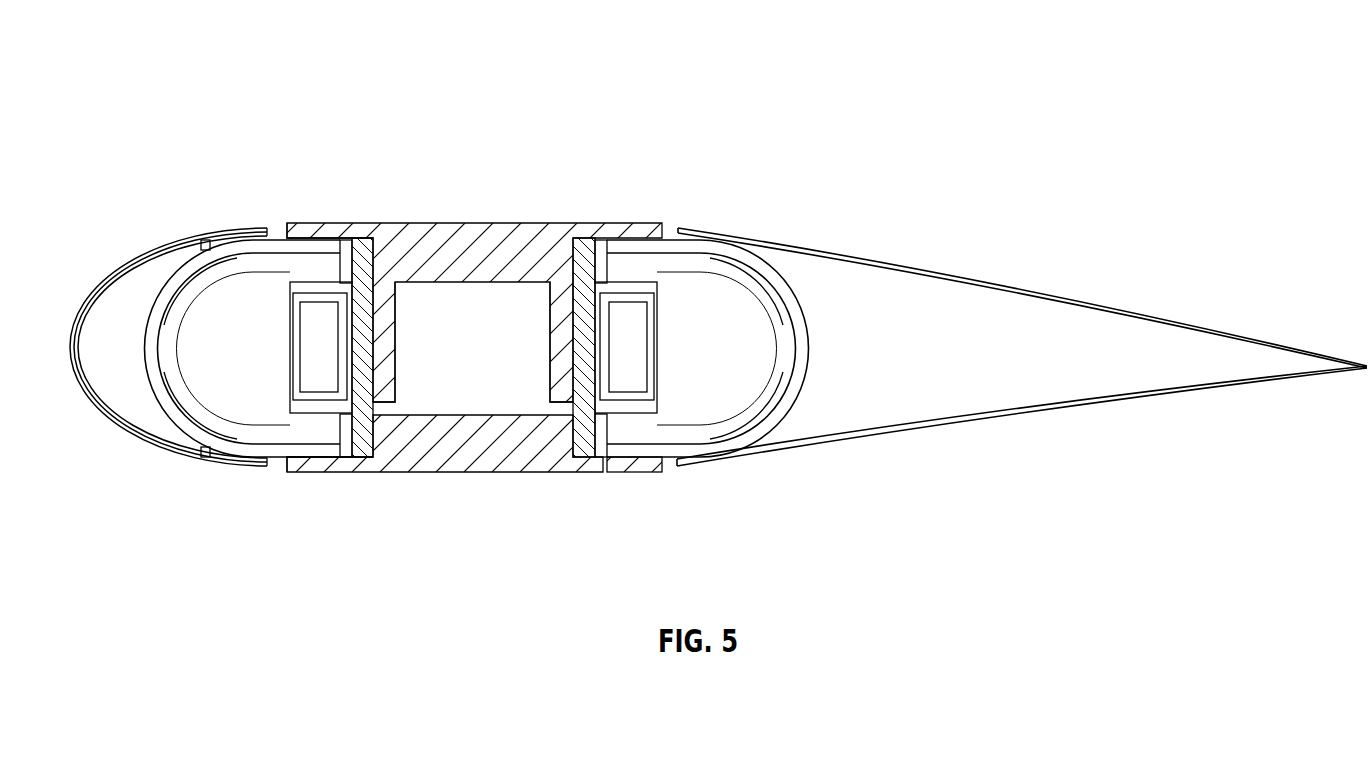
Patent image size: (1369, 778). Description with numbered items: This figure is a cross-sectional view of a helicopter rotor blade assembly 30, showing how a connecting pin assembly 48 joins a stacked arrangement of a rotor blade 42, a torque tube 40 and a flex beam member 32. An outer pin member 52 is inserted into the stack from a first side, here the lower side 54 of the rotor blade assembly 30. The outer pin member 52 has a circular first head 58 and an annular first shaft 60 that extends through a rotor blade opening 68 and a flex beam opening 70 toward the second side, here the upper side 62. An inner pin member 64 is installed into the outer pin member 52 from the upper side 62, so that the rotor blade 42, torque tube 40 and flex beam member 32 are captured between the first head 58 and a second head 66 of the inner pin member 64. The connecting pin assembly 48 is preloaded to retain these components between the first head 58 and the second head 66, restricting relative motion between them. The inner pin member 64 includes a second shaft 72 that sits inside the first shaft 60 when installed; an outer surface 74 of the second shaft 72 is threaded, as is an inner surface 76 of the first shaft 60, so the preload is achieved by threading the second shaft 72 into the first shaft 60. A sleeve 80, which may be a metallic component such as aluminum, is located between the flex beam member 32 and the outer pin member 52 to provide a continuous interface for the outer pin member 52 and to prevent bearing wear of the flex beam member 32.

The rotor blade assembly 30 is at (137, 120).
The flex beam member 32 is at (650, 378).
The torque tube 40 is at (670, 240).
The rotor blade 42 is at (223, 231).
The connecting pin assembly 48 is at (512, 234).
The outer pin member 52 is at (580, 472).
The lower side 54 is at (747, 457).
The first head 58 is at (305, 472).
The first shaft 60 is at (360, 387).
The upper side 62 is at (265, 226).
The inner pin member 64 is at (410, 234).
The second head 66 is at (323, 234).
The rotor blade opening 68 is at (263, 470).
The flex beam opening 70 is at (305, 322).
The second shaft 72 is at (383, 360).
The outer surface 74 is at (573, 333).
The inner surface 76 is at (575, 375).
The sleeve 80 is at (615, 462).